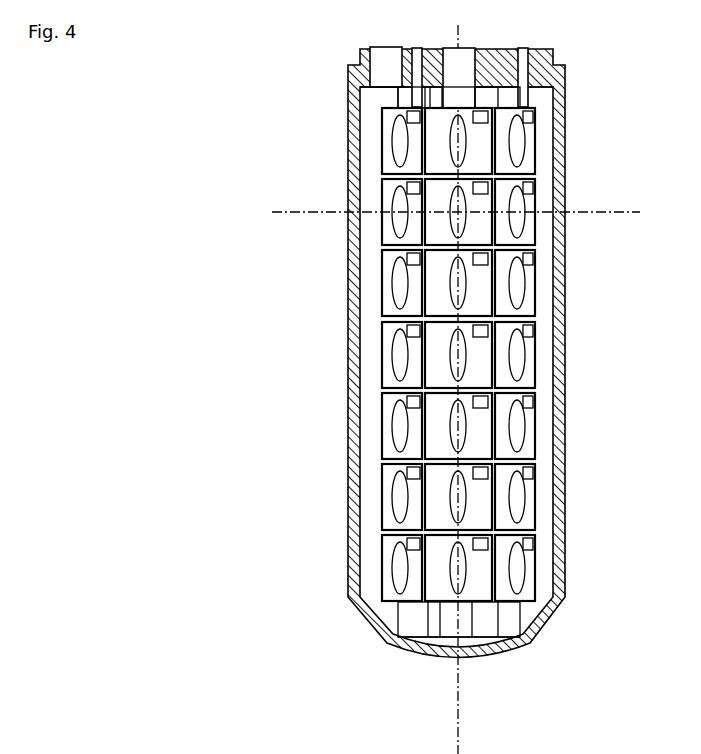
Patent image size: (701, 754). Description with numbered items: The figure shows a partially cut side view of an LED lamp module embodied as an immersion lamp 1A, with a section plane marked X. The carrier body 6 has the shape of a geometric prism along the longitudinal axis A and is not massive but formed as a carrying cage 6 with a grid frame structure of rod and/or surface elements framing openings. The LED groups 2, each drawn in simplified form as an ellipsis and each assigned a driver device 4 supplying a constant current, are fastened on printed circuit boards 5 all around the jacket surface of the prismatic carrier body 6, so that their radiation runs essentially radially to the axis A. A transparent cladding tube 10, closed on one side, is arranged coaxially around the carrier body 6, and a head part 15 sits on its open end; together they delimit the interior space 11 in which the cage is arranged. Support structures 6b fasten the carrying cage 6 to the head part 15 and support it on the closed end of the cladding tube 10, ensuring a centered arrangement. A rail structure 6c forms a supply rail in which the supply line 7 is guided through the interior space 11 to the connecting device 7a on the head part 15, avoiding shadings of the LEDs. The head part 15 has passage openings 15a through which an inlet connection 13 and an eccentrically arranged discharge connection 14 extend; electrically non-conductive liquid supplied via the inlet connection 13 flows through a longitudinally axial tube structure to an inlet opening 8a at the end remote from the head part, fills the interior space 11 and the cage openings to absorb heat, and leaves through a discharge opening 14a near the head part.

The immersion lamp 1A is at (395, 356).
The LED group 2 is at (397, 204).
The driver device 4 is at (527, 113).
The printed circuit board 5 is at (532, 165).
The carrier body 6 is at (526, 622).
The support structure 6b is at (393, 107).
The rail structure 6c is at (475, 96).
The supply line 7 is at (417, 62).
The connecting device 7a is at (523, 78).
The inlet opening 8a is at (452, 637).
The cladding tube 10 is at (562, 374).
The interior space 11 is at (547, 492).
The inlet connection 13 is at (468, 55).
The discharge connection 14 is at (383, 53).
The discharge opening 14a is at (378, 85).
The head part 15 is at (556, 82).
The passage opening 15a is at (353, 71).
The longitudinal axis A is at (456, 48).
The section line X is at (283, 183).